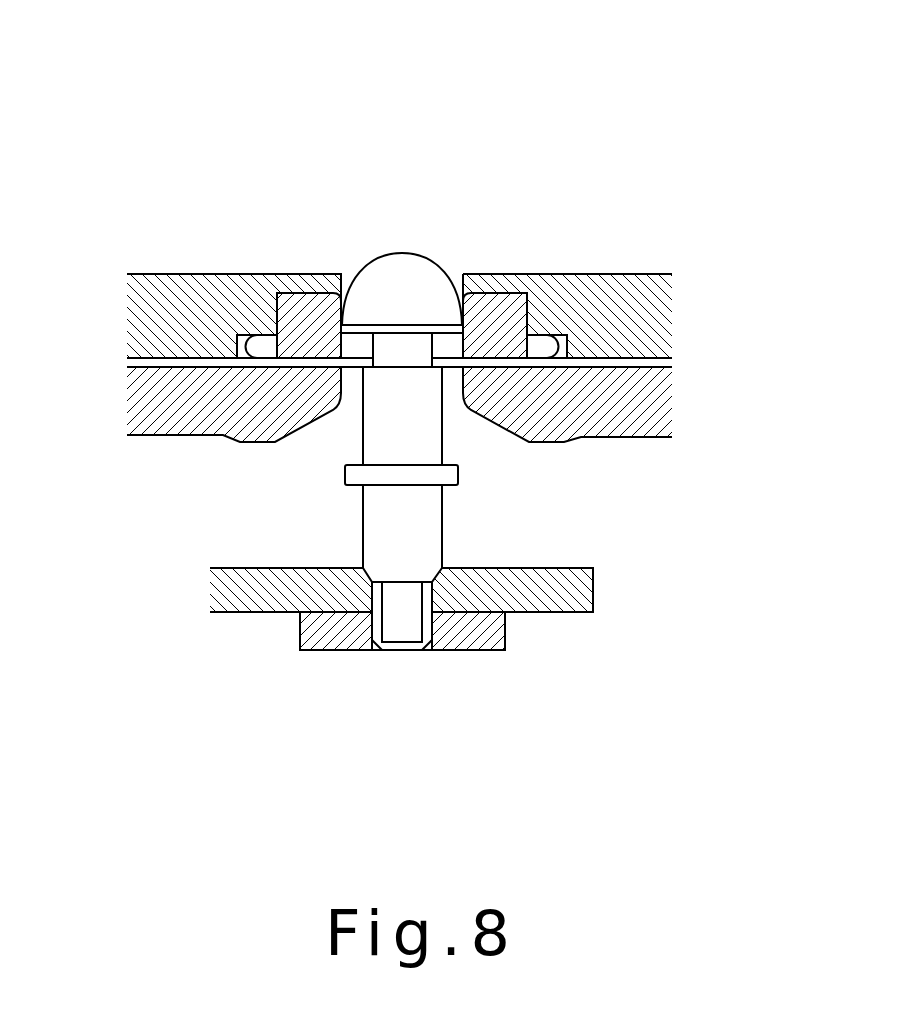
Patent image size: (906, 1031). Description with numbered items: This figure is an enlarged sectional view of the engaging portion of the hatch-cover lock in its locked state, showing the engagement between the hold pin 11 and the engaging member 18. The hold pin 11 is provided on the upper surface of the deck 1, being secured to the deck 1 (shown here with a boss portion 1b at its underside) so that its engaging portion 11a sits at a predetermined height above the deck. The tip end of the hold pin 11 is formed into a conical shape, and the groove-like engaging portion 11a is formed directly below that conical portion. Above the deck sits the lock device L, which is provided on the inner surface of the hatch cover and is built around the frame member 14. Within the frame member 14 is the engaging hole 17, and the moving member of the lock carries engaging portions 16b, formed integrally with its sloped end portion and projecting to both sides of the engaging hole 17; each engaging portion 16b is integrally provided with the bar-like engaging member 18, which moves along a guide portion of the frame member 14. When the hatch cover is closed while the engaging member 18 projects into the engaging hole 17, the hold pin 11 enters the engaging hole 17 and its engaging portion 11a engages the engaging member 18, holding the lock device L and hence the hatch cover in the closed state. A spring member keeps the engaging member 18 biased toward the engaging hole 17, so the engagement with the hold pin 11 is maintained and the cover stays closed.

The deck 1 is at (257, 590).
The boss 1b is at (338, 623).
The hold pin 11 is at (393, 236).
The engaging portion 11a is at (402, 350).
The frame member 14 is at (613, 287).
The engaging portion 16b is at (328, 318).
The engaging hole 17 is at (343, 428).
The engaging member 18 is at (447, 350).
The lock device L is at (532, 255).